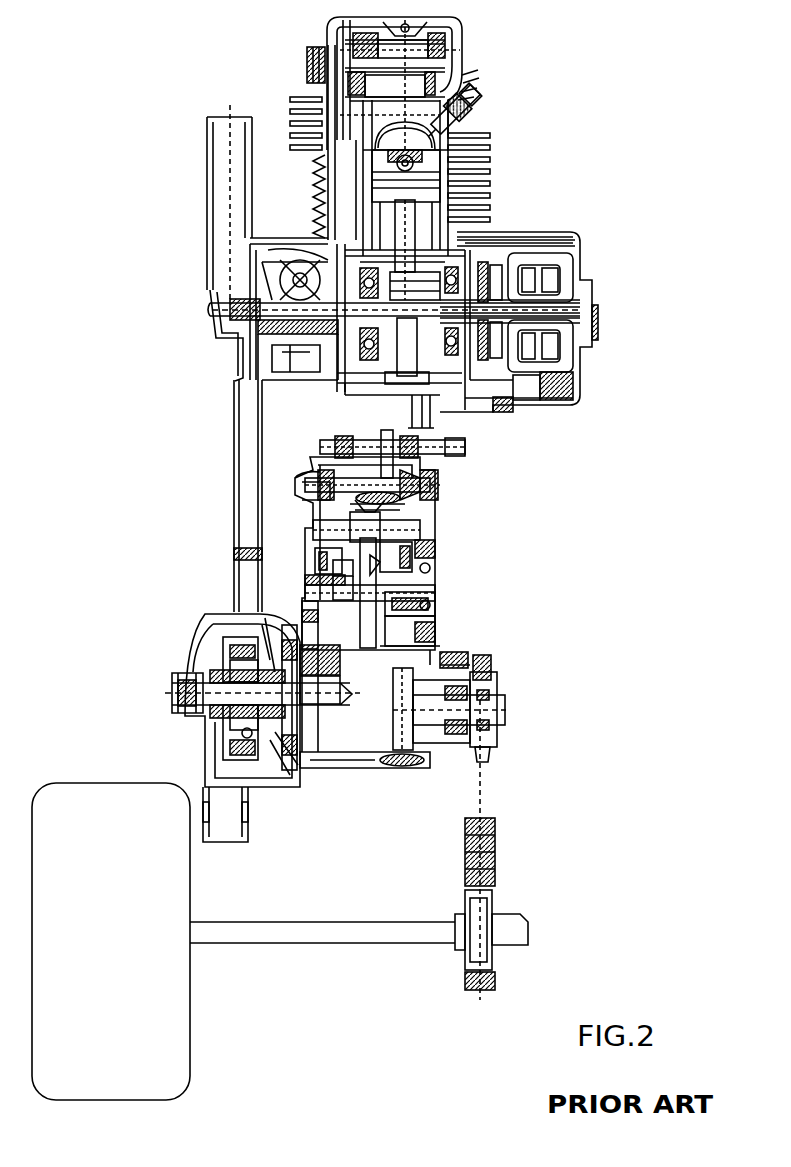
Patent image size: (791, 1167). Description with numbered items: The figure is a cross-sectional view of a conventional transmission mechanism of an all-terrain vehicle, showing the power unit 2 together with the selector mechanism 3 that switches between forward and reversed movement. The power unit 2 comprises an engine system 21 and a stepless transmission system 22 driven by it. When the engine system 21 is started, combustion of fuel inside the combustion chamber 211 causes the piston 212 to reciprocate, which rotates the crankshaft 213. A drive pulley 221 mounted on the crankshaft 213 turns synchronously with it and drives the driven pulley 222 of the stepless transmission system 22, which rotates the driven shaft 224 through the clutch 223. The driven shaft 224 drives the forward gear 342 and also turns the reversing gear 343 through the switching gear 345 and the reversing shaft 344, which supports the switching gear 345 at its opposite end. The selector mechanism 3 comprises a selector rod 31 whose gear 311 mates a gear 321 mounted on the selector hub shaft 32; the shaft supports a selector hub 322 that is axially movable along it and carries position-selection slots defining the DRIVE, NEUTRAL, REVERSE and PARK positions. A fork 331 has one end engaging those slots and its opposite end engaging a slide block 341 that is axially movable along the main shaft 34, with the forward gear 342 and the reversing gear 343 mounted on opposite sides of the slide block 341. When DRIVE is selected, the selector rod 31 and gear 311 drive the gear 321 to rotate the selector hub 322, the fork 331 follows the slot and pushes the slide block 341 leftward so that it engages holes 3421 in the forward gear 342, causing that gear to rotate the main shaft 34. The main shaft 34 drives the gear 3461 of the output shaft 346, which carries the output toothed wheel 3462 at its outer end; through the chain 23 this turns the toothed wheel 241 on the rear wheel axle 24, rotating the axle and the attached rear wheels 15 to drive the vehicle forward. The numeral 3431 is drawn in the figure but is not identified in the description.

The power unit 2 is at (389, 227).
The engine system 21 is at (466, 72).
The combustion chamber 211 is at (375, 150).
The piston 212 is at (470, 203).
The crankshaft 213 is at (446, 410).
The stepless transmission system 22 is at (215, 482).
The drive pulley 221 is at (240, 380).
The driven pulley 222 is at (325, 770).
The clutch 223 is at (245, 625).
The driven shaft 224 is at (192, 668).
The chain 23 is at (494, 826).
The rear wheel axle 24 is at (377, 914).
The toothed wheel 241 is at (490, 885).
The rear wheels 15 is at (192, 893).
The selector mechanism 3 is at (341, 599).
The selector rod 31 is at (465, 447).
The gear 311 is at (393, 460).
The selector hub shaft 32 is at (438, 490).
The gear 321 is at (400, 500).
The selector hub 322 is at (300, 470).
The fork 331 is at (315, 520).
The main shaft 34 is at (438, 586).
The slide block 341 is at (436, 608).
The forward gear 342 is at (318, 550).
The holes 3421 is at (333, 566).
The reversing gear 343 is at (435, 553).
The shift fork 3431 is at (430, 568).
The reversing shaft 344 is at (440, 632).
The switching gear 345 is at (305, 600).
The output shaft 346 is at (497, 700).
The gear 3461 is at (440, 650).
The output toothed wheel 3462 is at (488, 752).